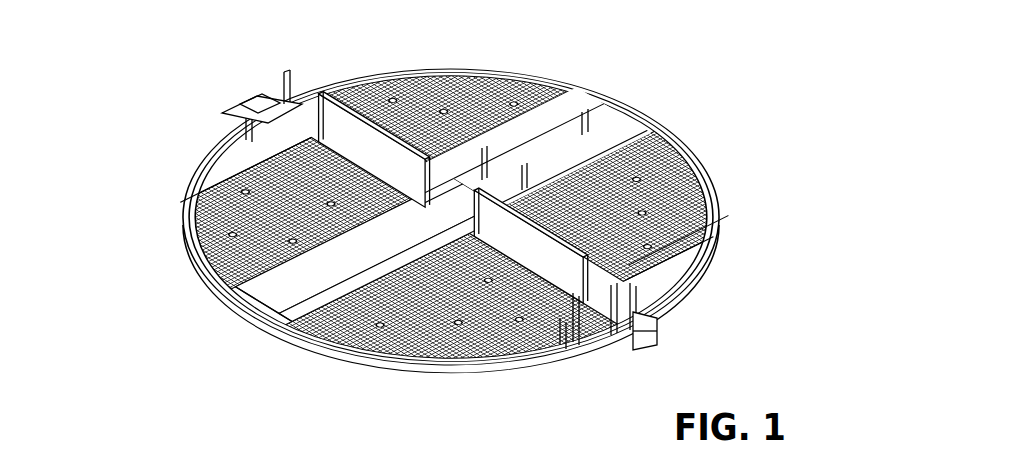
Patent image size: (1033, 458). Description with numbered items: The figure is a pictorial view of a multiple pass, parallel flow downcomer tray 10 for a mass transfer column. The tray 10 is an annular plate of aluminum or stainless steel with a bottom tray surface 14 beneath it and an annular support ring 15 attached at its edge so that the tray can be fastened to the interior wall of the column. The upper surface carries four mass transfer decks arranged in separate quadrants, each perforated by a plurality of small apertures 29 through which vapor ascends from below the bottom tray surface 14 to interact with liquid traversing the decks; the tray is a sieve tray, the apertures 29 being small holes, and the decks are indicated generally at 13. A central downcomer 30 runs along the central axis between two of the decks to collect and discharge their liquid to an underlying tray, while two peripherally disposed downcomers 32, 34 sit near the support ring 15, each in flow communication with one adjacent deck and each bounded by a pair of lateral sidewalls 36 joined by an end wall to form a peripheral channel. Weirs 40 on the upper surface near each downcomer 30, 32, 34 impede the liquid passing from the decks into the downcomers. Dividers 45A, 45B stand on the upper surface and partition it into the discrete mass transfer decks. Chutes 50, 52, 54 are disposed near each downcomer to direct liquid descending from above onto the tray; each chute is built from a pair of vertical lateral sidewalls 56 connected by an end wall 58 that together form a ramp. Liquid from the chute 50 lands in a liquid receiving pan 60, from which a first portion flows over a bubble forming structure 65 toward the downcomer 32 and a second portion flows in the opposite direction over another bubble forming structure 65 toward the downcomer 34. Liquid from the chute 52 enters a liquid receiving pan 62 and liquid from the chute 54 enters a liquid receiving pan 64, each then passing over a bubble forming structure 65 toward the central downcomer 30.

The multiple pass downcomer tray 10 is at (117, 90).
The first grid section 13 is at (489, 84).
The bottom tray surface 14 is at (377, 390).
The annular support ring 15 is at (702, 287).
The apertures 29 is at (460, 88).
The central downcomer 30 is at (582, 170).
The first peripherally disposed downcomer 32 is at (574, 352).
The second peripherally disposed downcomer 34 is at (245, 155).
The lateral sidewalls 36 is at (642, 205).
The weirs 40 is at (605, 125).
The divider 45A is at (505, 249).
The divider 45B is at (350, 155).
The chute 50 is at (470, 185).
The chute 52 is at (610, 325).
The chute 54 is at (282, 118).
The lateral sidewalls 56 is at (250, 106).
The end wall 58 is at (245, 118).
The liquid receiving pan 60 is at (339, 275).
The liquid receiving pan 62 is at (670, 278).
The liquid receiving pan 64 is at (364, 100).
The bubble forming structure 65 is at (416, 95).